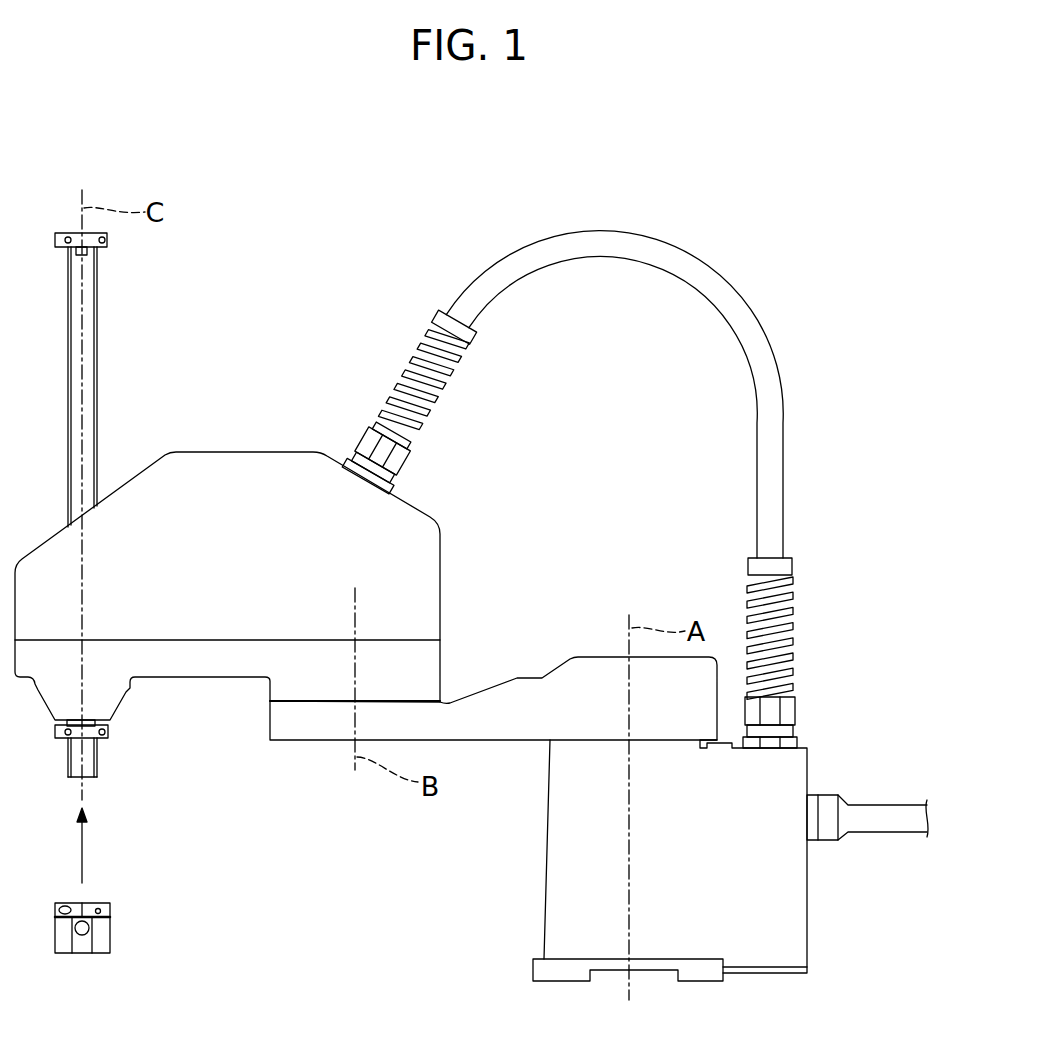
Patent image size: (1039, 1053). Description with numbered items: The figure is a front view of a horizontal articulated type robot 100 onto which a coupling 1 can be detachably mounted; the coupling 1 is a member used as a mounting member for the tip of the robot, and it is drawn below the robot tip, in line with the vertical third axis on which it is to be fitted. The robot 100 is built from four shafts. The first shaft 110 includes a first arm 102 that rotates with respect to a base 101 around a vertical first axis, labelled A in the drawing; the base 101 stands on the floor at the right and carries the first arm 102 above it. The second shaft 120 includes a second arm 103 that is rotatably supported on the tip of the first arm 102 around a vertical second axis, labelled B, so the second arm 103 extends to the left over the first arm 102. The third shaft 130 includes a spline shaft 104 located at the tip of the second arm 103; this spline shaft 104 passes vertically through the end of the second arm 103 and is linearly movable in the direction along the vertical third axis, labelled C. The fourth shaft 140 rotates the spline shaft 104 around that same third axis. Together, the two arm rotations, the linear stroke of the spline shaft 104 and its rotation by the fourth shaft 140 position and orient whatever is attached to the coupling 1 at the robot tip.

The coupling 1 is at (124, 942).
The horizontal articulated type robot 100 is at (707, 209).
The base 101 is at (807, 905).
The first arm 102 is at (530, 678).
The second arm 103 is at (232, 677).
The spline shaft 104 is at (97, 384).
The first shaft 110 is at (595, 643).
The second shaft 120 is at (180, 691).
The third shaft 130 is at (111, 327).
The fourth shaft 140 is at (123, 752).